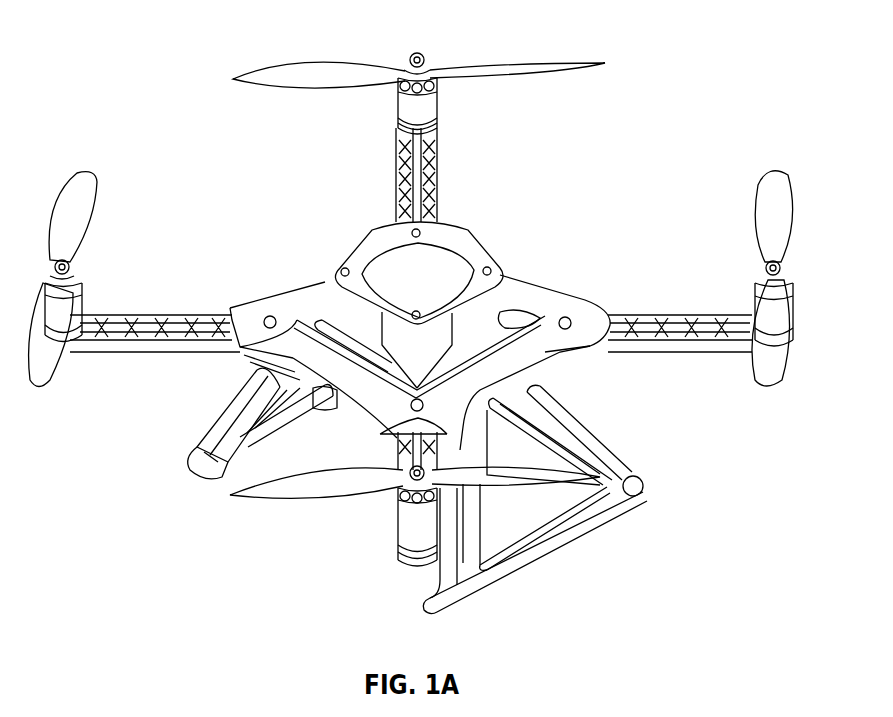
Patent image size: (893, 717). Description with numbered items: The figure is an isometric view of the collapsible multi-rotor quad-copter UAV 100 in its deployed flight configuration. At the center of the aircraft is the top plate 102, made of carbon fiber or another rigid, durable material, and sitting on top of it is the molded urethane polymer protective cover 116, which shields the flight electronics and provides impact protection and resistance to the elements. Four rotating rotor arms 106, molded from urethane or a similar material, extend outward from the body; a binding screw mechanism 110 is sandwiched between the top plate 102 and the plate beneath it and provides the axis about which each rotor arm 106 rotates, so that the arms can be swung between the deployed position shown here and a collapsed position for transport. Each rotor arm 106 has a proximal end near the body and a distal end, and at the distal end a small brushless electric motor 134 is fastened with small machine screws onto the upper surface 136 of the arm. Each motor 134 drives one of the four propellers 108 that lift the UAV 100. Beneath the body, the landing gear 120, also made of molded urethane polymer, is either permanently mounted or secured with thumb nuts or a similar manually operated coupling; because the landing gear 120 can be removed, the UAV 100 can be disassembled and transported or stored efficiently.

The UAV 100 is at (562, 639).
The top plate 102 is at (557, 305).
The rotor arm 106 is at (140, 315).
The propeller 108 is at (83, 210).
The binding screw mechanism 110 is at (567, 326).
The protective cover 116 is at (472, 253).
The landing gear 120 is at (614, 512).
The brushless electric motor 134 is at (437, 97).
The upper surface 136 is at (90, 333).